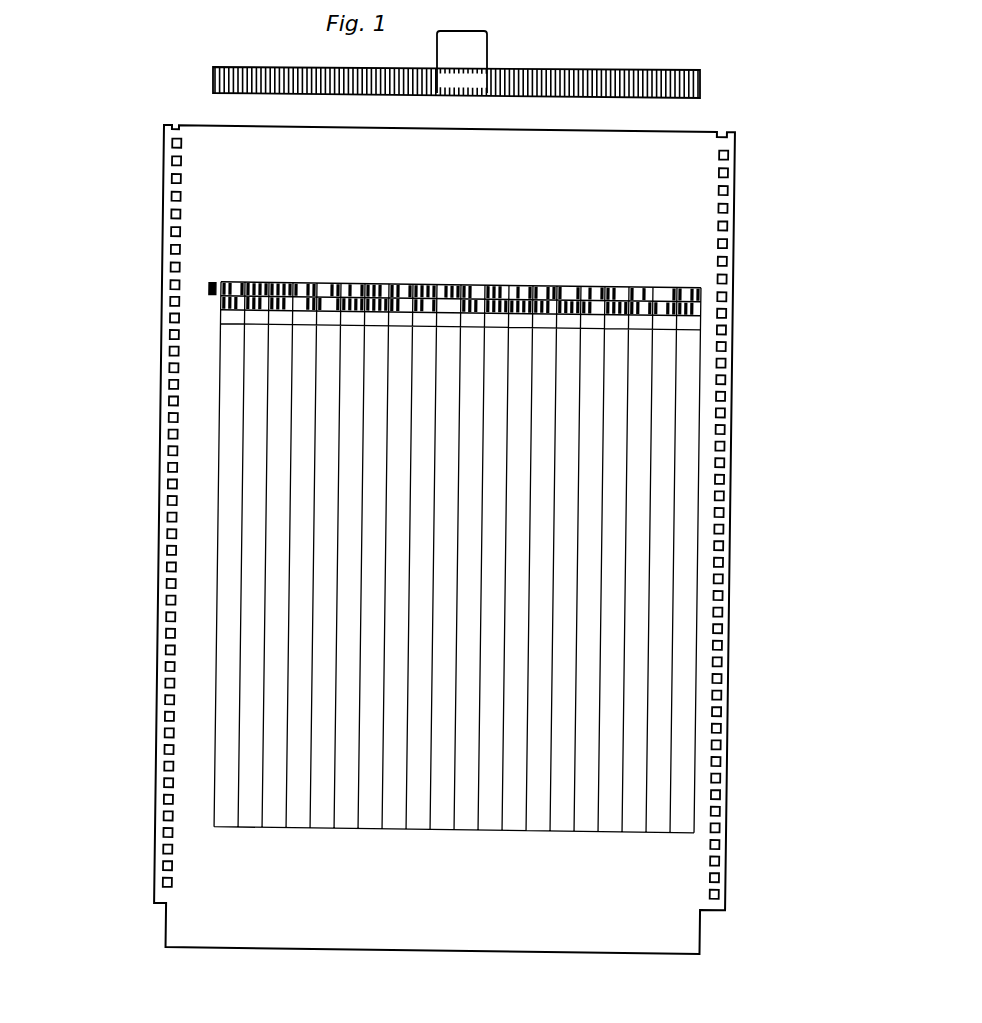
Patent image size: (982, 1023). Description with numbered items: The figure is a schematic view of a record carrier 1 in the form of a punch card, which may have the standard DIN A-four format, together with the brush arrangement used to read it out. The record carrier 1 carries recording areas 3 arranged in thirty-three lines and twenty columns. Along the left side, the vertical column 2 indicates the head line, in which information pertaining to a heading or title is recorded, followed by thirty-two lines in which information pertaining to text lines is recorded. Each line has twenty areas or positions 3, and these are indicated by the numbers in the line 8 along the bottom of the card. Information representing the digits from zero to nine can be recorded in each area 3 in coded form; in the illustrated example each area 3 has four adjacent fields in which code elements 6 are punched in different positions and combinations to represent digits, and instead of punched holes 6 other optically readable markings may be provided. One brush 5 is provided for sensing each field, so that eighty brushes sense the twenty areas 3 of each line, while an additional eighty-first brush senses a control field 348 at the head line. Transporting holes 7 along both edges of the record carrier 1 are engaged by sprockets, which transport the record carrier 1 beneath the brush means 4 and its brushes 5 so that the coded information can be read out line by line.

The record carrier 1 is at (461, 527).
The vertical column 2 is at (187, 311).
The recording areas 3 is at (690, 327).
The brush means 4 is at (475, 47).
The brush 5 is at (677, 72).
The code elements 6 is at (693, 307).
The transporting holes 7 is at (728, 410).
The line 8 is at (573, 845).
The control field 348 is at (212, 287).